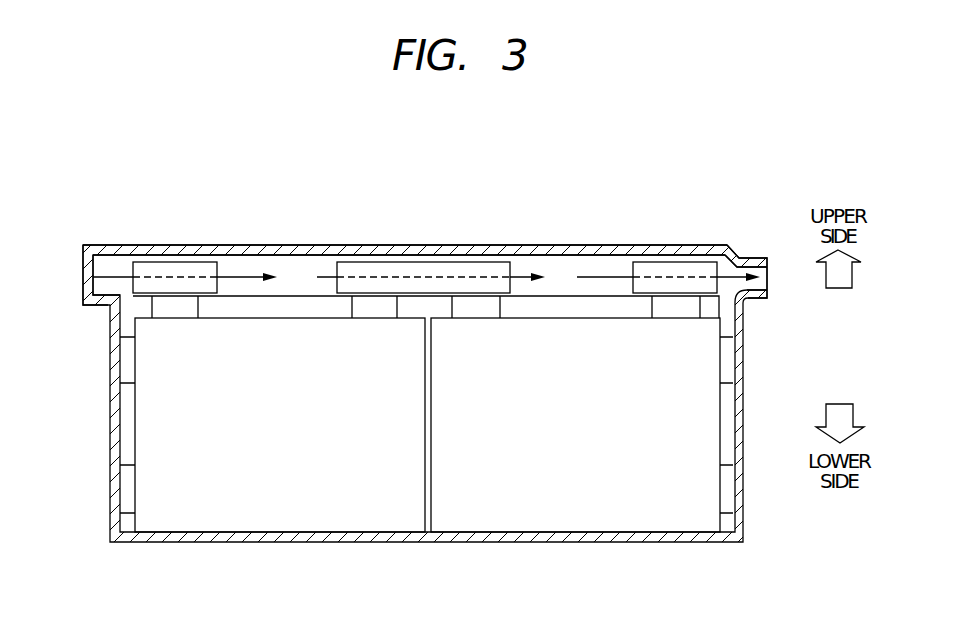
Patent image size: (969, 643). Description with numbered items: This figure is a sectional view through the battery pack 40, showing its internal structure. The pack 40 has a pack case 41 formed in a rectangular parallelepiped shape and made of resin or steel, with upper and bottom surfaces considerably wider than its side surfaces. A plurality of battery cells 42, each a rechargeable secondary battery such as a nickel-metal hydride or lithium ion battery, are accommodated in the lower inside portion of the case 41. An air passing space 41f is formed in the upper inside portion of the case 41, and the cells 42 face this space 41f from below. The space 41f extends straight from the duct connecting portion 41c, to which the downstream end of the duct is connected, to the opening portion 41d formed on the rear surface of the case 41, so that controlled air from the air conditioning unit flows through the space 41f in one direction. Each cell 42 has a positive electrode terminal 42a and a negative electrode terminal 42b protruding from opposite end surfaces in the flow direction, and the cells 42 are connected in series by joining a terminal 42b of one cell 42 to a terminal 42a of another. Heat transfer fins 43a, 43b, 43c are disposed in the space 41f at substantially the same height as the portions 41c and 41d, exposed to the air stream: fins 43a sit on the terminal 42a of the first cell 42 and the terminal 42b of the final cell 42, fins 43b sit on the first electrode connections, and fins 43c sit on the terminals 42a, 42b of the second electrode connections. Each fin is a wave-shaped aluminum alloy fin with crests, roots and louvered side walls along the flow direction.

The battery pack 40 is at (466, 239).
The pack case 41 is at (742, 396).
The duct connecting portion 41c is at (74, 255).
The opening portion 41d is at (768, 270).
The air passing space 41f is at (285, 262).
The battery cell 42 is at (383, 505).
The positive electrode terminal 42a is at (194, 312).
The negative electrode terminal 42b is at (350, 311).
The heat transfer fin 43a is at (173, 266).
The heat transfer fin 43b is at (335, 264).
The heat transfer fin 43c is at (632, 264).